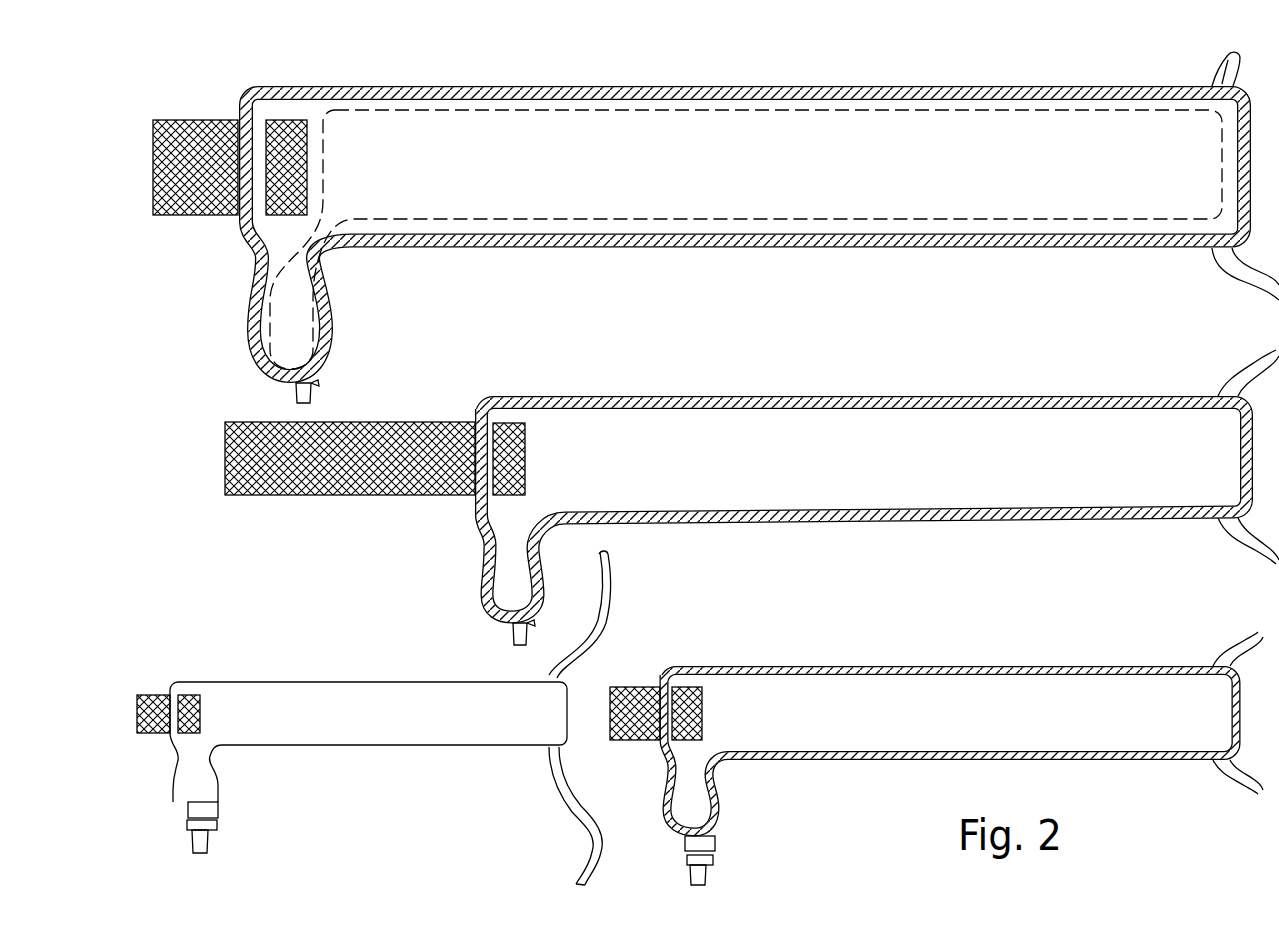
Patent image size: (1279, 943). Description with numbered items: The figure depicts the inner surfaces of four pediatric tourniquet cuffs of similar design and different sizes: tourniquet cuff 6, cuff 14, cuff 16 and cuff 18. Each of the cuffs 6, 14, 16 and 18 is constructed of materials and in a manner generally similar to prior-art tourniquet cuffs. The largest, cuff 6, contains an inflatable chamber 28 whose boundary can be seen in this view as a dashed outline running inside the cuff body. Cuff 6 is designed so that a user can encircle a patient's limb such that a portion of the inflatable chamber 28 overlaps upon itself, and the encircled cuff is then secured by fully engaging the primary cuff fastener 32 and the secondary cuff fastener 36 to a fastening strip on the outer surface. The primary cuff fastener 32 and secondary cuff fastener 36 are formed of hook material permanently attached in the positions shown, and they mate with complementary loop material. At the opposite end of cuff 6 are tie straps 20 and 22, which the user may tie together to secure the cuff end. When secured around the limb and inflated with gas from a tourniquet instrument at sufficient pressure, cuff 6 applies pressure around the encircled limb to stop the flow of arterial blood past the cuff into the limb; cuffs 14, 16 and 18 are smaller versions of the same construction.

The tourniquet cuff 6 is at (483, 85).
The cuff 14 is at (818, 395).
The cuff 16 is at (841, 665).
The cuff 18 is at (316, 681).
The tie strap 20 is at (1222, 75).
The tie strap 22 is at (1230, 258).
The inflatable chamber 28 is at (378, 108).
The primary cuff fastener 32 is at (290, 128).
The secondary cuff fastener 36 is at (186, 118).